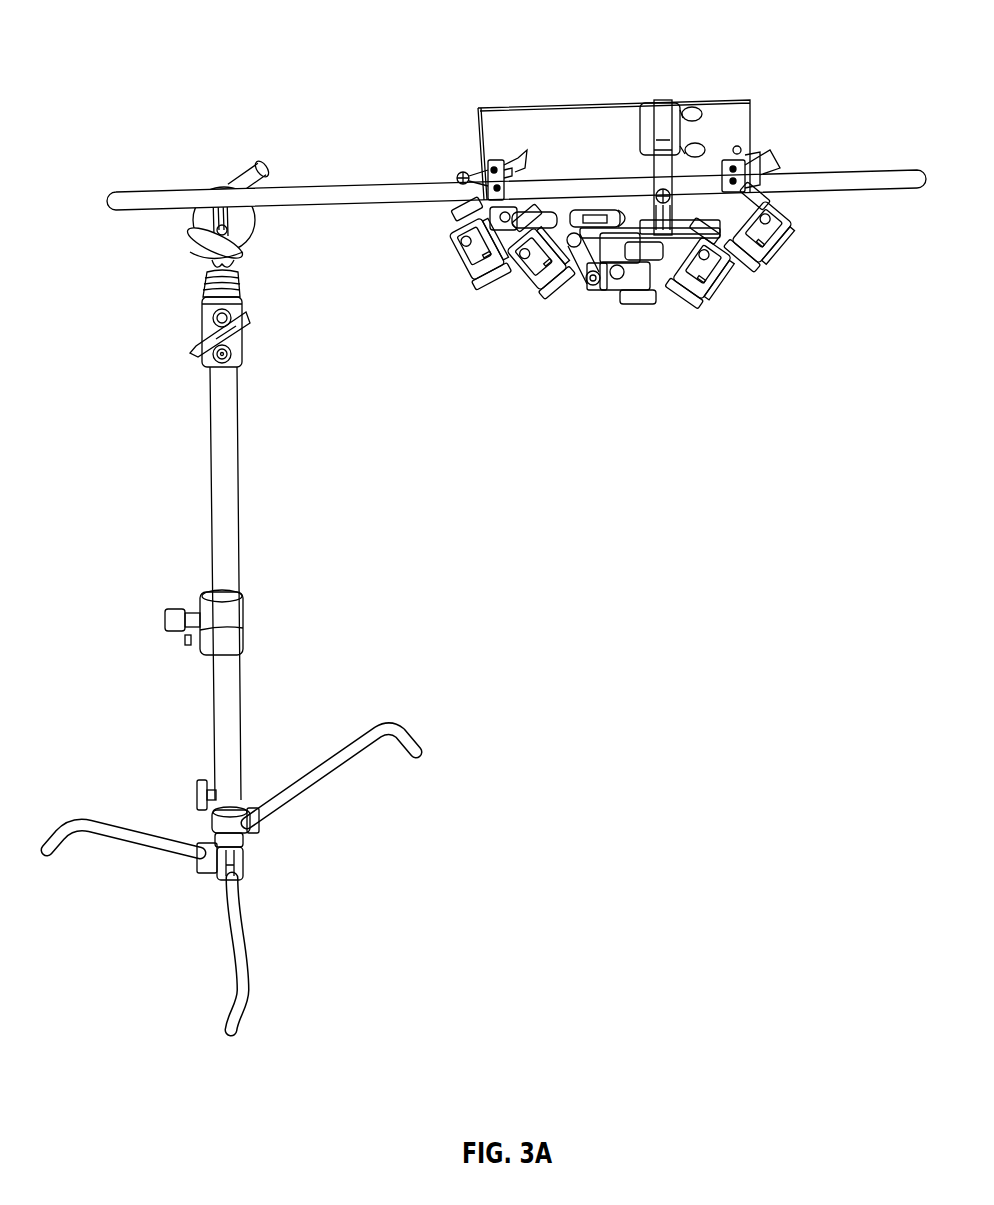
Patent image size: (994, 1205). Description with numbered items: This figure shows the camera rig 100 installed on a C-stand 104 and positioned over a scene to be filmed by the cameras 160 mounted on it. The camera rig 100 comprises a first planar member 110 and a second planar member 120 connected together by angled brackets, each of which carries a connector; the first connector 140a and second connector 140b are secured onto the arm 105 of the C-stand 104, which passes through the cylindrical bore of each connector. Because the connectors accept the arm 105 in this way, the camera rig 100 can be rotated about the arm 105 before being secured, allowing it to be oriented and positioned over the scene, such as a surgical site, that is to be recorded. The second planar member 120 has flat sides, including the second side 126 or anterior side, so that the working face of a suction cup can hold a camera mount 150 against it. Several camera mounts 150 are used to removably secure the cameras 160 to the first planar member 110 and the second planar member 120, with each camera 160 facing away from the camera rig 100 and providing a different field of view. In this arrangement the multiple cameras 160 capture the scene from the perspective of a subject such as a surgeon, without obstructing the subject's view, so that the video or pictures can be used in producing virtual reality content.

The camera rig 100 is at (631, 206).
The C-stand 104 is at (238, 480).
The arm 105 is at (823, 183).
The first planar member 110 is at (568, 215).
The second planar member 120 is at (590, 110).
The second side 126 is at (490, 133).
The first connector 140a is at (750, 162).
The second connector 140b is at (518, 186).
The camera mount 150 is at (662, 104).
The camera 160 is at (785, 250).